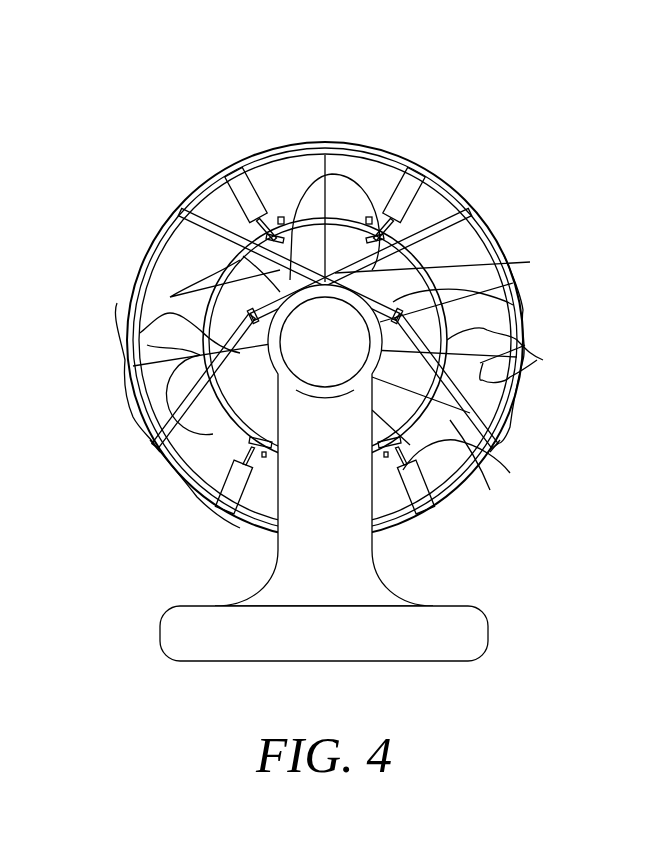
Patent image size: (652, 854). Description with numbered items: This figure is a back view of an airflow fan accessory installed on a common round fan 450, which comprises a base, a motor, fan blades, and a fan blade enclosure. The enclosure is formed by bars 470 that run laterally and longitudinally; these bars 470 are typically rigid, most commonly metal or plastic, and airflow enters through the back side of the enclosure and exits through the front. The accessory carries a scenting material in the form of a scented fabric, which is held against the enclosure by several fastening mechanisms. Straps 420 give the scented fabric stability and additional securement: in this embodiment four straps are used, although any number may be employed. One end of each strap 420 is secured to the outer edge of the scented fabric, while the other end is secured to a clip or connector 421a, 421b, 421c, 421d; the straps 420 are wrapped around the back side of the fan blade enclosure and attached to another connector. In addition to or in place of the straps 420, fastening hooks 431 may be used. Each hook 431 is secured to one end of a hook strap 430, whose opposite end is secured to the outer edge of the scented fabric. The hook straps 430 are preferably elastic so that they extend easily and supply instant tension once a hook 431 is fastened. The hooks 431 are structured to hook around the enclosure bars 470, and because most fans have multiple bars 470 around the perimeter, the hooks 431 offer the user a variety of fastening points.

The straps 420 is at (187, 218).
The clip or connector 421a is at (405, 256).
The clip or connector 421b is at (243, 254).
The clip or connector 421c is at (380, 270).
The clip or connector 421d is at (235, 282).
The hook straps 430 is at (418, 175).
The fastening hooks 431 is at (381, 210).
The round fan 450 is at (457, 572).
The bars 470 is at (147, 345).